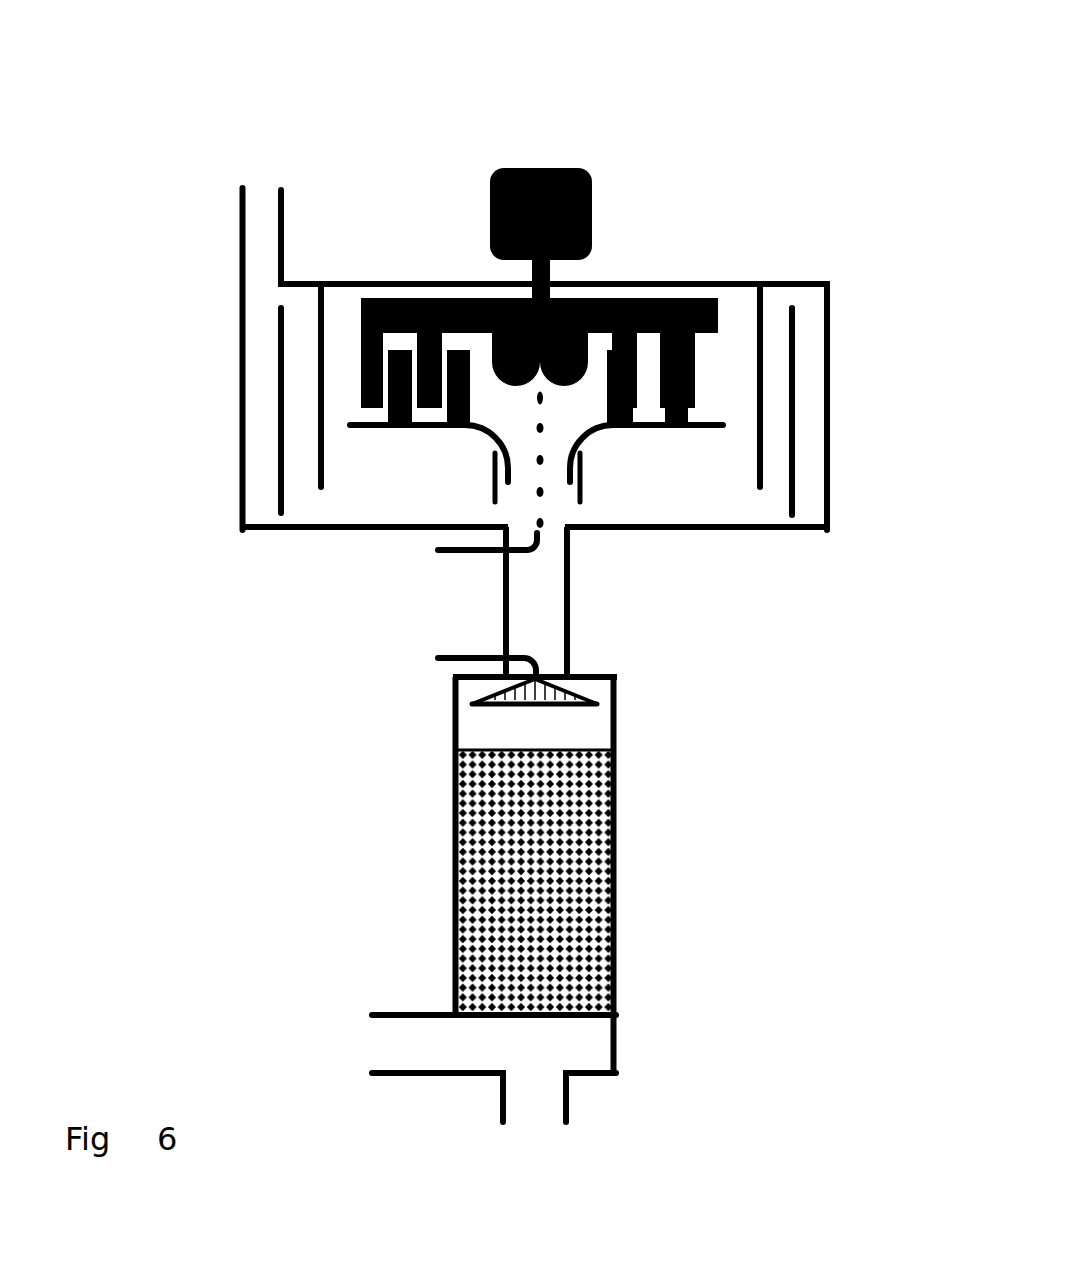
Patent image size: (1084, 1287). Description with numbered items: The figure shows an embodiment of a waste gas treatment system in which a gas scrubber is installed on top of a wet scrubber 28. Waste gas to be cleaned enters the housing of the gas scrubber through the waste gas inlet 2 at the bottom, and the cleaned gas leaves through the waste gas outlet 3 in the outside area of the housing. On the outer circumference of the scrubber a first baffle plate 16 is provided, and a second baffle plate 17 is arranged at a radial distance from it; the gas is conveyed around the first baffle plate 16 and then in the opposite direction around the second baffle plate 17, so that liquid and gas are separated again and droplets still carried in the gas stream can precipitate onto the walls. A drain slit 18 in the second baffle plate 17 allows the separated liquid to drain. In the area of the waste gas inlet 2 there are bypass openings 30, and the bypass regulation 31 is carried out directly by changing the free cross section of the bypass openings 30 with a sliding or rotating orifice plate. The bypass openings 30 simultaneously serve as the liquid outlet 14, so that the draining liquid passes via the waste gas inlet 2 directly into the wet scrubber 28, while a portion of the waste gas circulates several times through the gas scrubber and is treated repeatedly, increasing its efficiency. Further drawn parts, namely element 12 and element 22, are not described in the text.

The waste gas outlet 3 is at (268, 192).
The drain slit 18 is at (267, 517).
The first baffle plate 16 is at (767, 293).
The second baffle plate 17 is at (797, 327).
The electrode carrier plate with nozzle opening 22 is at (667, 473).
The bypass regulation 31 is at (582, 490).
The bypass openings 30 is at (676, 506).
The liquid outlet 14 is at (578, 513).
The waste gas inlet 2 is at (548, 570).
The inlet stub 12 is at (480, 557).
The wet scrubber 28 is at (593, 865).